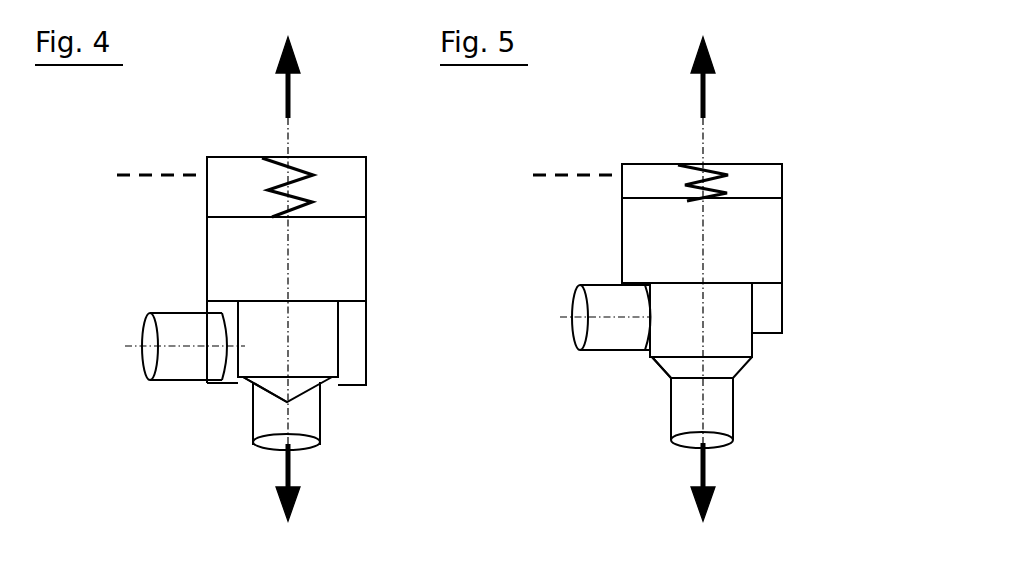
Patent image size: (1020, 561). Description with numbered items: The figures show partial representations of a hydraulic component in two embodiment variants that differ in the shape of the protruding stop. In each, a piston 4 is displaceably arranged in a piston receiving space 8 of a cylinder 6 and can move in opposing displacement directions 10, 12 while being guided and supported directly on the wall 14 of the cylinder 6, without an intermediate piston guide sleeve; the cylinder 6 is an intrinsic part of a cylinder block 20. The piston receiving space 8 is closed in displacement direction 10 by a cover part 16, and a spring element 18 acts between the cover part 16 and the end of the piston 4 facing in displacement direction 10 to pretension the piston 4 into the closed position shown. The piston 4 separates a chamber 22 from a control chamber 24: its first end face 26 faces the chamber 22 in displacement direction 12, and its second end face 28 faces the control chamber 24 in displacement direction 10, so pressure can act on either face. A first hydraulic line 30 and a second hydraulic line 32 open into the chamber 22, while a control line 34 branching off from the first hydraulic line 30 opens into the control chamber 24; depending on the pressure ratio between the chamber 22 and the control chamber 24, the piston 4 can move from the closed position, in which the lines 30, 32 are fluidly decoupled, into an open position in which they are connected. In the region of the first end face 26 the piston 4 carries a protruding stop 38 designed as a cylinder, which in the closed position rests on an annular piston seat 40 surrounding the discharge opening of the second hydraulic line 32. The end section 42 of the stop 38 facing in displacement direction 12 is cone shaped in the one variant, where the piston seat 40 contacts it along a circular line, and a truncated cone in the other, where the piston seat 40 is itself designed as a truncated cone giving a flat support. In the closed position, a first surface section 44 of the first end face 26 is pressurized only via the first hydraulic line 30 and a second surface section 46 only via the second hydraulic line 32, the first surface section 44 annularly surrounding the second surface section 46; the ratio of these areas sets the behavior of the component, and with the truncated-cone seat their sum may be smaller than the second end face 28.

In FIG. 4, the piston 4 is at (332, 261).
In FIG. 5, the piston 4 is at (737, 261).
In FIG. 4, the cylinder 6 is at (367, 258).
In FIG. 5, the cylinder 6 is at (782, 258).
In FIG. 4, the piston receiving space 8 is at (340, 263).
In FIG. 5, the piston receiving space 8 is at (751, 251).
In FIG. 4, the displacement direction 10 is at (283, 92).
In FIG. 5, the displacement direction 10 is at (698, 92).
In FIG. 4, the displacement direction 12 is at (290, 462).
In FIG. 5, the displacement direction 12 is at (703, 462).
In FIG. 4, the wall 14 is at (354, 228).
In FIG. 5, the wall 14 is at (770, 228).
In FIG. 4, the cover part 16 is at (355, 157).
In FIG. 5, the cover part 16 is at (770, 162).
In FIG. 4, the spring element 18 is at (297, 175).
In FIG. 5, the spring element 18 is at (712, 172).
In FIG. 4, the cylinder block 20 is at (448, 227).
In FIG. 5, the cylinder block 20 is at (865, 227).
In FIG. 4, the chamber 22 is at (355, 368).
In FIG. 5, the chamber 22 is at (762, 343).
In FIG. 4, the control chamber 24 is at (255, 182).
In FIG. 5, the control chamber 24 is at (670, 182).
In FIG. 4, the first end face 26 is at (186, 393).
In FIG. 5, the first end face 26 is at (603, 377).
In FIG. 4, the second end face 28 is at (226, 210).
In FIG. 5, the second end face 28 is at (642, 192).
In FIG. 4, the first hydraulic line 30 is at (175, 327).
In FIG. 5, the first hydraulic line 30 is at (590, 298).
In FIG. 4, the second hydraulic line 32 is at (312, 417).
In FIG. 5, the second hydraulic line 32 is at (730, 418).
In FIG. 4, the control line 34 is at (145, 172).
In FIG. 5, the control line 34 is at (560, 172).
In FIG. 4, the protruding stop 38 is at (312, 327).
In FIG. 5, the protruding stop 38 is at (727, 327).
In FIG. 4, the annular piston seat 40 is at (323, 392).
In FIG. 5, the annular piston seat 40 is at (747, 370).
In FIG. 4, the end section 42 is at (296, 383).
In FIG. 5, the end section 42 is at (715, 367).
In FIG. 4, the first surface section 44 is at (226, 308).
In FIG. 5, the first surface section 44 is at (648, 292).
In FIG. 4, the second surface section 46 is at (266, 402).
In FIG. 5, the second surface section 46 is at (684, 385).